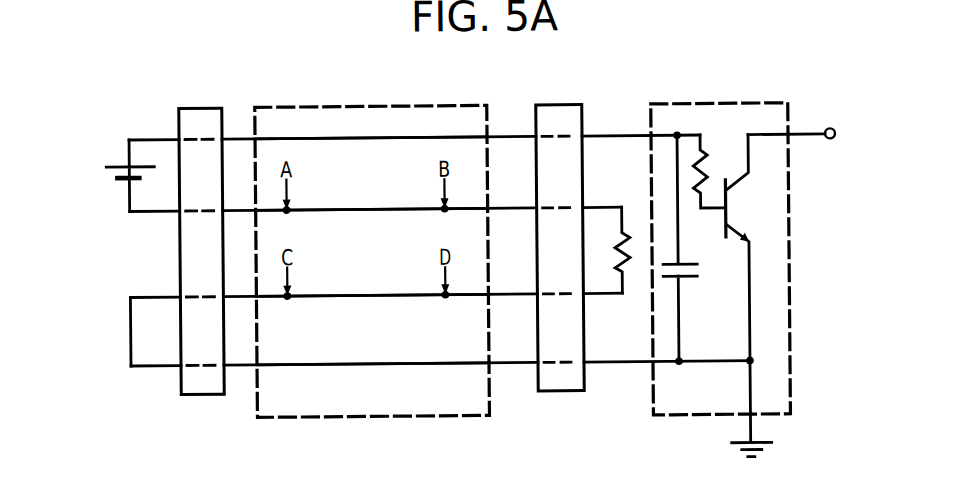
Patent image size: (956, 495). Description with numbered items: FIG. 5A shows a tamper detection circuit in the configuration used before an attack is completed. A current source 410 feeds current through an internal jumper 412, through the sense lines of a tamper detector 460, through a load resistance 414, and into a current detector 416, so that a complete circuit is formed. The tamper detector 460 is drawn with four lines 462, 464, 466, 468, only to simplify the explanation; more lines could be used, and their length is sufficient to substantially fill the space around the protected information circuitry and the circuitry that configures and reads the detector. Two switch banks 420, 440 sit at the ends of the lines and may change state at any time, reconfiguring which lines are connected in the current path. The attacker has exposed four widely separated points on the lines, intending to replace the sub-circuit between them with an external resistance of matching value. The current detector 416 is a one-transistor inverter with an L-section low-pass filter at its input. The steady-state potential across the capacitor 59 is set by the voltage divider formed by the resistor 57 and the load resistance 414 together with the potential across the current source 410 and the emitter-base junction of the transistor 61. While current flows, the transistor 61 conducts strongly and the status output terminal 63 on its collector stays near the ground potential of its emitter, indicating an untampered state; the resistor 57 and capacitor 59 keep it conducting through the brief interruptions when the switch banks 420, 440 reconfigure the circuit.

The current source 410 is at (128, 183).
The internal jumper 412 is at (130, 328).
The switch bank 420 is at (210, 108).
The switch bank 440 is at (571, 109).
The tamper detector 460 is at (470, 108).
The sense line 462 is at (338, 145).
The sense line 464 is at (335, 215).
The sense line 466 is at (337, 300).
The sense line 468 is at (335, 370).
The load resistance 414 is at (626, 283).
The current detector 416 is at (730, 108).
The resistor 57 is at (704, 161).
The capacitor 59 is at (686, 283).
The transistor 61 is at (748, 218).
The status output terminal 63 is at (835, 134).